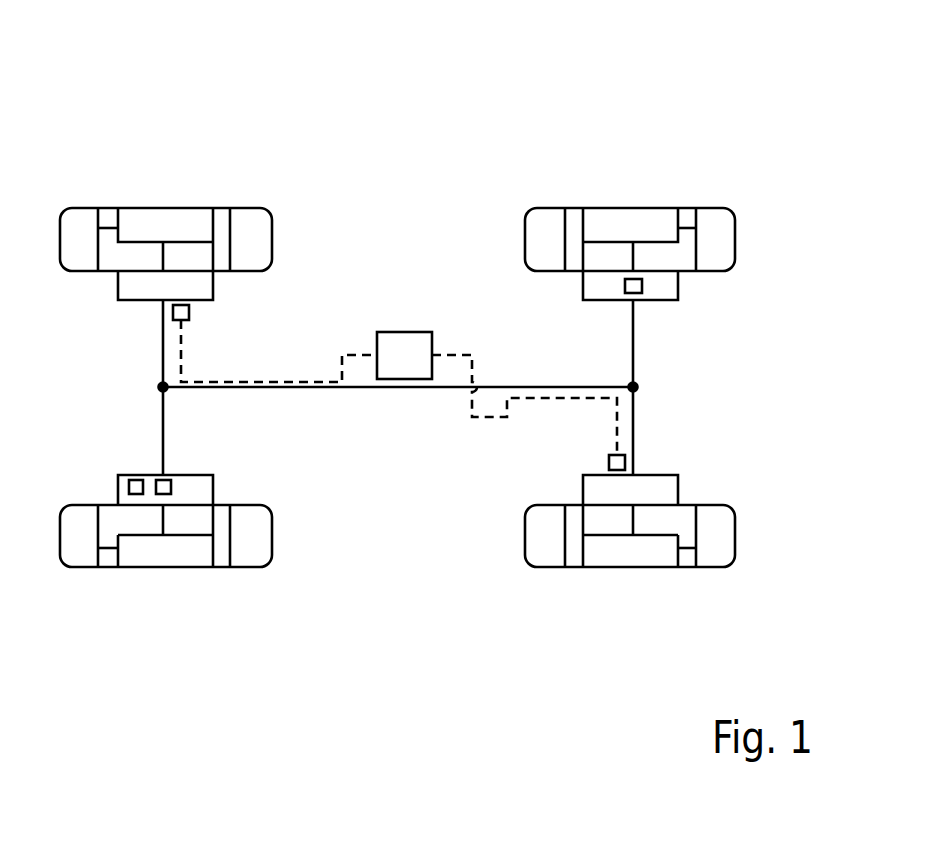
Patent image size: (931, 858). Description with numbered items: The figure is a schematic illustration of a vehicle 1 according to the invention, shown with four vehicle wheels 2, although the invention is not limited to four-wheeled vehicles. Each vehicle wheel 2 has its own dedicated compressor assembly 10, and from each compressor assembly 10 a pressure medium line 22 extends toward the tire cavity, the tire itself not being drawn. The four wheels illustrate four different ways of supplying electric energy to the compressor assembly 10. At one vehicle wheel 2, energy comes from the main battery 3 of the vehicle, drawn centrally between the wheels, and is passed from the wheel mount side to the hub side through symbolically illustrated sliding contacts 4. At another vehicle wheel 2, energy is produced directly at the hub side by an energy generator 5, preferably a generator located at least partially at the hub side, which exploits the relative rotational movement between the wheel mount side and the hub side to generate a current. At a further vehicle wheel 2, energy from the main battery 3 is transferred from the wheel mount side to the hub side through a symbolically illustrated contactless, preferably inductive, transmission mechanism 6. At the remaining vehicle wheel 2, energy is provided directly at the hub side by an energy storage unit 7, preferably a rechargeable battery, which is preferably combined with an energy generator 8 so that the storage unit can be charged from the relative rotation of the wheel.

The vehicle 1 is at (683, 110).
The vehicle wheel 2 is at (231, 182).
The main battery 3 is at (412, 368).
The sliding contacts 4 is at (189, 312).
The energy generator 5 is at (642, 286).
The transmission mechanism 6 is at (609, 461).
The energy storage unit 7 is at (171, 486).
The energy generator 8 is at (135, 480).
The compressor assembly 10 is at (187, 208).
The pressure medium line 22 is at (112, 208).